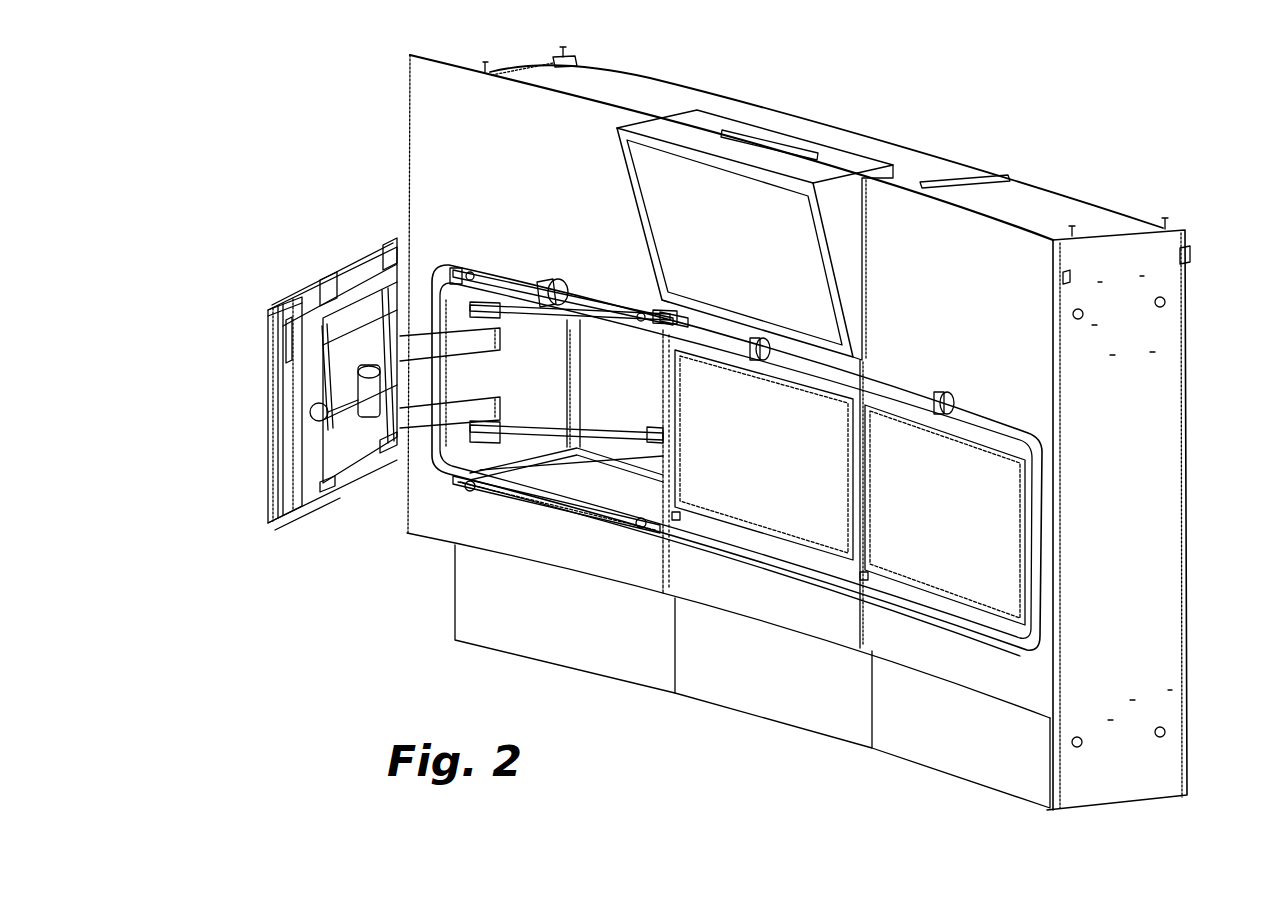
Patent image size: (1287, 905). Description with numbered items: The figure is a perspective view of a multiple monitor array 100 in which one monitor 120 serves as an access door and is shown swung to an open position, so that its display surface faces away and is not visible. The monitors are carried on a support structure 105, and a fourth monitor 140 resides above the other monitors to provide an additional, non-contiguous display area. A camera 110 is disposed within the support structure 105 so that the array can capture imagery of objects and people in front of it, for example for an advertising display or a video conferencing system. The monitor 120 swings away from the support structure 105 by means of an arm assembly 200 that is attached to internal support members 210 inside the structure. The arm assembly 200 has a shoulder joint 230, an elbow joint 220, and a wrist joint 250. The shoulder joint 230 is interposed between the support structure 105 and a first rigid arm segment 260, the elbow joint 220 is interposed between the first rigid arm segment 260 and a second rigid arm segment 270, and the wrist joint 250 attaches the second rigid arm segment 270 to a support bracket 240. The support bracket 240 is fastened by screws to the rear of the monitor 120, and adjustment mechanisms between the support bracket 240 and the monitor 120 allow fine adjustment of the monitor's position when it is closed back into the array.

The multiple monitor array 100 is at (279, 142).
The support structure 105 is at (1148, 380).
The camera 110 is at (563, 272).
The monitor 120 is at (255, 300).
The fourth monitor 140 is at (818, 243).
The arm assembly 200 is at (420, 298).
The internal support members 210 is at (548, 462).
The elbow joint 220 is at (400, 460).
The shoulder joint 230 is at (515, 276).
The support bracket 240 is at (307, 390).
The wrist joint 250 is at (367, 460).
The first rigid arm segment 260 is at (447, 437).
The second rigid arm segment 270 is at (386, 370).